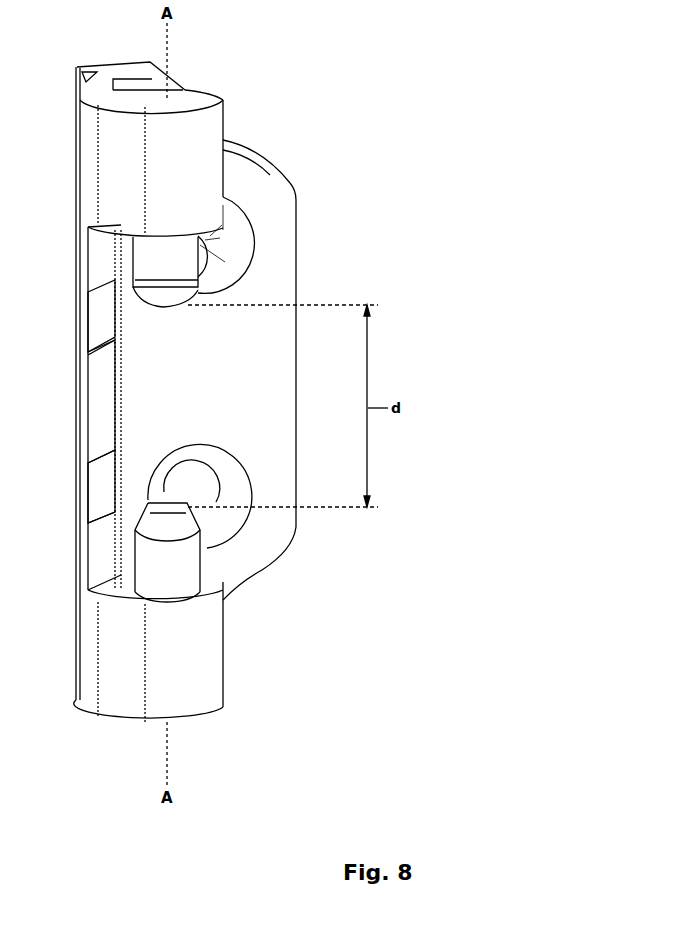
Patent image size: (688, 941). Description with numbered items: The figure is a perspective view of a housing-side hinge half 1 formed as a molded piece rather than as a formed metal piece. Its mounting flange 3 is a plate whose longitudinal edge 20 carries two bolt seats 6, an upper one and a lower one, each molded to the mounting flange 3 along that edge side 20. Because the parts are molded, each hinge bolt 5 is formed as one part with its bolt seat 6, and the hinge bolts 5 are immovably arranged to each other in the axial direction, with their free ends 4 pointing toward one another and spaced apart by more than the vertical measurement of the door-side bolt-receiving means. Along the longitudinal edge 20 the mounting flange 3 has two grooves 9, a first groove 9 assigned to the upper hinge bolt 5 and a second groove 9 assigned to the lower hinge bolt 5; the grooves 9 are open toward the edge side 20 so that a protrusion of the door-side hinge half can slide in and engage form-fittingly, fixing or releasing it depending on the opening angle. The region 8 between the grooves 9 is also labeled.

The housing-side hinge half 1 is at (337, 76).
The mounting flange 3 is at (270, 401).
The free ends 4 is at (174, 262).
The hinge bolts 5 is at (207, 270).
The bolt seat 6 is at (200, 127).
The web 8 is at (99, 414).
The groove 9 is at (102, 317).
The longitudinal edge 20 is at (86, 262).